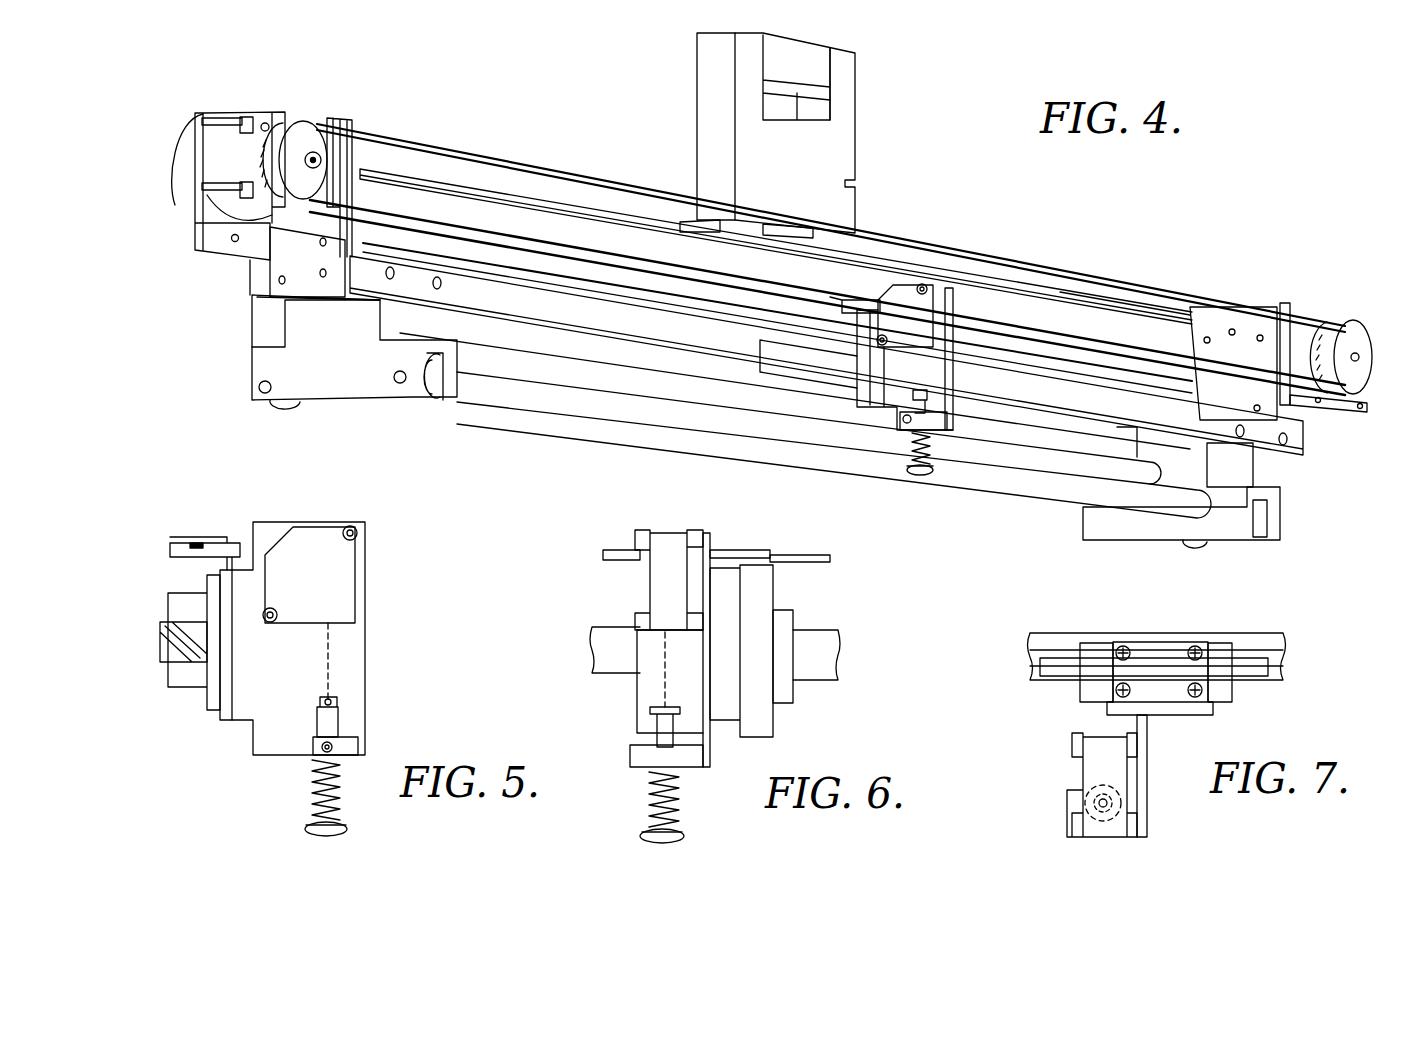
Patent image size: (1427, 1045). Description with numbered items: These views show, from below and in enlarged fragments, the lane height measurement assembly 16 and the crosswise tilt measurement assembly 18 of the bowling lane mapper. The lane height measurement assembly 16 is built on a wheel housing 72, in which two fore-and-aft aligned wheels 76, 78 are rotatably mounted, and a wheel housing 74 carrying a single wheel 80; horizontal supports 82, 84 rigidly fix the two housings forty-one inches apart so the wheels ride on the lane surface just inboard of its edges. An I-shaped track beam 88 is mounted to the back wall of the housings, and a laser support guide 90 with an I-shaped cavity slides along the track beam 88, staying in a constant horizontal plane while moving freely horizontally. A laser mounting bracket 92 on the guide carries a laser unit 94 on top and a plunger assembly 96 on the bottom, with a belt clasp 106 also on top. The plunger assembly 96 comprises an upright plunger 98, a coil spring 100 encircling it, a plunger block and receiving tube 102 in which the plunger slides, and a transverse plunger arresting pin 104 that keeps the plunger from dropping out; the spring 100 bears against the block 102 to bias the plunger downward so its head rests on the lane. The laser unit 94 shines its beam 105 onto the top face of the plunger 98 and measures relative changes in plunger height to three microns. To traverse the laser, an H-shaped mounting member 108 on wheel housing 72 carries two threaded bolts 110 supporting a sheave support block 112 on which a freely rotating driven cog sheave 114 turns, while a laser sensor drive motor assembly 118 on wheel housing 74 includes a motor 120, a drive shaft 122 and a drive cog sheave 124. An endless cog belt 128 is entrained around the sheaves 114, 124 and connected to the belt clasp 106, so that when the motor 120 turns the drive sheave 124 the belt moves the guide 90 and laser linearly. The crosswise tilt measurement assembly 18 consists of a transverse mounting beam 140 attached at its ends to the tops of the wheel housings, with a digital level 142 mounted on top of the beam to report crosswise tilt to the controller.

In FIG. 4, the lane height measurement assembly 16 is at (1022, 512).
In FIG. 4, the crosswise tilt measurement assembly 18 is at (693, 75).
In FIG. 4, the wheel housing 72 is at (345, 380).
In FIG. 4, the wheel housing 74 is at (1278, 520).
In FIG. 4, the wheel 76 is at (438, 400).
In FIG. 4, the wheel 78 is at (276, 405).
In FIG. 4, the wheel 80 is at (1200, 548).
In FIG. 4, the horizontal support 82 is at (733, 432).
In FIG. 4, the horizontal support 84 is at (569, 380).
In FIG. 4, the I-shaped track beam 88 is at (1300, 439).
In FIG. 5, the I-shaped track beam 88 is at (163, 635).
In FIG. 6, the I-shaped track beam 88 is at (835, 655).
In FIG. 7, the I-shaped track beam 88 is at (1030, 640).
In FIG. 4, the laser support guide 90 is at (840, 383).
In FIG. 5, the laser support guide 90 is at (188, 683).
In FIG. 6, the laser support guide 90 is at (787, 700).
In FIG. 7, the laser support guide 90 is at (1085, 690).
In FIG. 4, the laser mounting bracket 92 is at (953, 333).
In FIG. 5, the laser mounting bracket 92 is at (270, 530).
In FIG. 6, the laser mounting bracket 92 is at (710, 740).
In FIG. 7, the laser mounting bracket 92 is at (1148, 773).
In FIG. 4, the laser unit 94 is at (904, 297).
In FIG. 5, the laser unit 94 is at (343, 555).
In FIG. 6, the laser unit 94 is at (670, 540).
In FIG. 7, the laser unit 94 is at (1090, 772).
In FIG. 4, the plunger assembly 96 is at (918, 457).
In FIG. 5, the plunger assembly 96 is at (307, 758).
In FIG. 6, the plunger assembly 96 is at (646, 768).
In FIG. 4, the plunger 98 is at (928, 478).
In FIG. 5, the plunger 98 is at (310, 830).
In FIG. 6, the plunger 98 is at (683, 838).
In FIG. 7, the plunger 98 is at (1085, 800).
In FIG. 4, the coil spring 100 is at (928, 449).
In FIG. 5, the coil spring 100 is at (342, 800).
In FIG. 6, the coil spring 100 is at (677, 798).
In FIG. 4, the plunger block and receiving tube 102 is at (900, 418).
In FIG. 5, the plunger block and receiving tube 102 is at (350, 746).
In FIG. 6, the plunger block and receiving tube 102 is at (640, 752).
In FIG. 5, the plunger arresting pin 104 is at (337, 702).
In FIG. 6, the plunger arresting pin 104 is at (657, 712).
In FIG. 5, the beam 105 is at (328, 653).
In FIG. 6, the beam 105 is at (653, 663).
In FIG. 4, the belt clasp 106 is at (858, 300).
In FIG. 5, the belt clasp 106 is at (218, 543).
In FIG. 6, the belt clasp 106 is at (740, 552).
In FIG. 7, the belt clasp 106 is at (1155, 645).
In FIG. 4, the H-shaped mounting member 108 is at (338, 120).
In FIG. 4, the threaded bolts 110 is at (176, 174).
In FIG. 4, the sheave support block 112 is at (261, 113).
In FIG. 4, the driven cog sheave 114 is at (303, 130).
In FIG. 4, the laser sensor drive motor assembly 118 is at (1356, 318).
In FIG. 4, the motor 120 is at (1314, 310).
In FIG. 4, the drive shaft 122 is at (1359, 356).
In FIG. 4, the drive cog sheave 124 is at (1368, 378).
In FIG. 4, the endless cog belt 128 is at (1112, 283).
In FIG. 5, the endless cog belt 128 is at (197, 543).
In FIG. 6, the endless cog belt 128 is at (800, 560).
In FIG. 7, the endless cog belt 128 is at (1245, 672).
In FIG. 4, the transverse mounting beam 140 is at (534, 214).
In FIG. 4, the digital level 142 is at (850, 85).